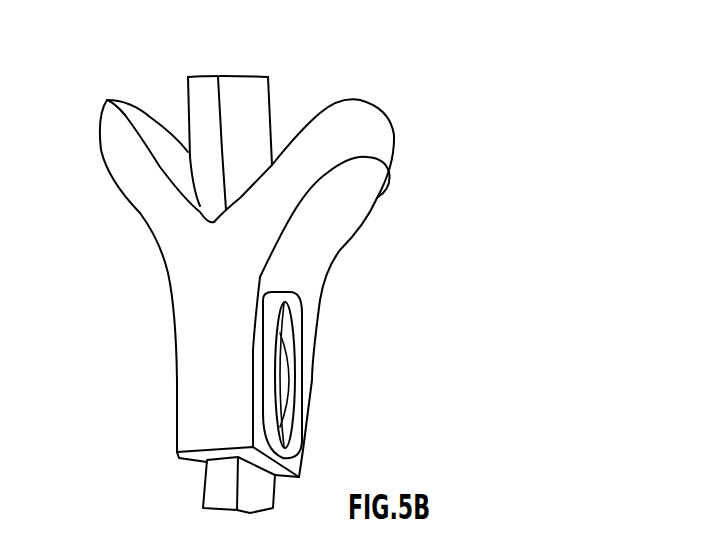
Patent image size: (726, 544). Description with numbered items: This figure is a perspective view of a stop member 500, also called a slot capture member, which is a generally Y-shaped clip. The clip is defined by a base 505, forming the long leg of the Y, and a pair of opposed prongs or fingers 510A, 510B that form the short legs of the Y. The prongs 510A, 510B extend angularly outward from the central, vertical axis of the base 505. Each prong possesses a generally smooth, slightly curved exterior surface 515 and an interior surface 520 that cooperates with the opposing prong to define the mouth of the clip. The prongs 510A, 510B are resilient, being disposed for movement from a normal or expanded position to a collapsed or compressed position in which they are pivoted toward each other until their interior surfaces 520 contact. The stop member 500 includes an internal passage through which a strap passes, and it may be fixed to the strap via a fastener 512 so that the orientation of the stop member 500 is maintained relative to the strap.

The stop member 500 is at (390, 90).
The base 505 is at (197, 377).
The prong 510A is at (157, 200).
The prong 510B is at (360, 148).
The fastener 512 is at (283, 382).
The exterior surface 515 is at (357, 195).
The interior surface 520 is at (143, 125).